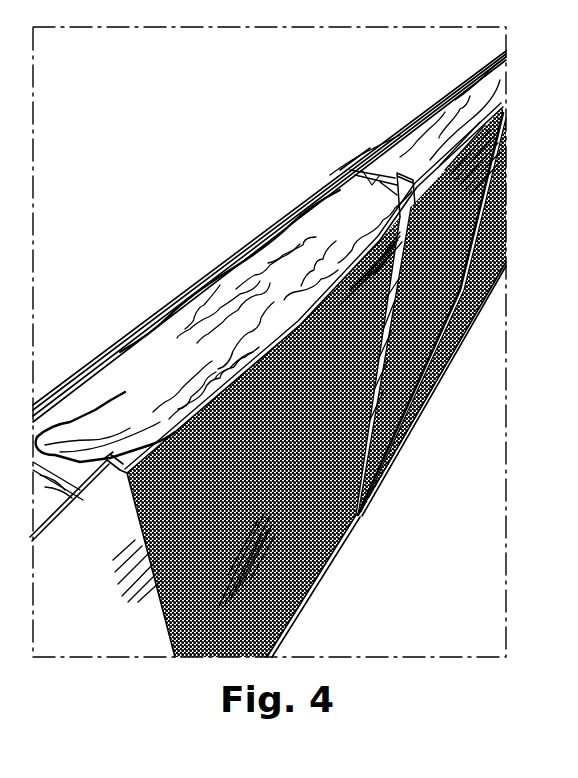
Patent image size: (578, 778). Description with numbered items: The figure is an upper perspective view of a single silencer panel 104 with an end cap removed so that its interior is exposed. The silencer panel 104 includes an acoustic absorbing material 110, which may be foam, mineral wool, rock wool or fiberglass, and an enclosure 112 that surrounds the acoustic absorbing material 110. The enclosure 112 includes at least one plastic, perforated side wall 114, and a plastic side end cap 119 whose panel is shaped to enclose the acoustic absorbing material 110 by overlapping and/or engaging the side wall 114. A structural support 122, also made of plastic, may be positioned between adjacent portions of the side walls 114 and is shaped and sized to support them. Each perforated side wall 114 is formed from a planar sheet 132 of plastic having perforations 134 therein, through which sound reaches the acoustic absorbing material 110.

The silencer panel 104 is at (278, 228).
The acoustic absorbing material 110 is at (240, 297).
The enclosure 112 is at (300, 570).
The perforated side wall 114 is at (190, 433).
The side end cap 119 is at (355, 168).
The structural support 122 is at (477, 230).
The planar sheet 132 is at (437, 187).
The perforations 134 is at (377, 378).